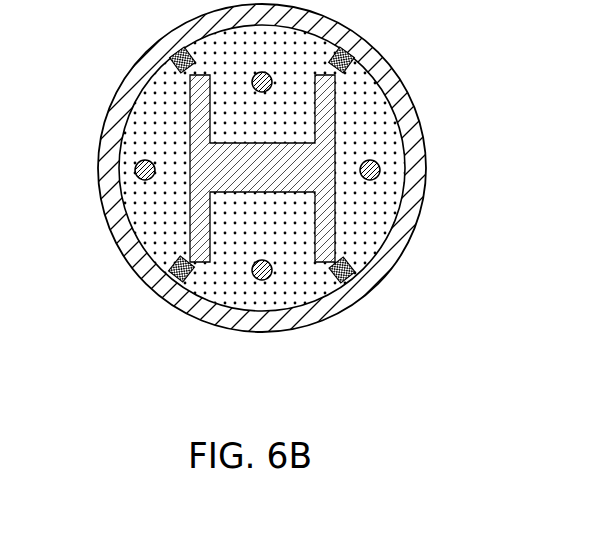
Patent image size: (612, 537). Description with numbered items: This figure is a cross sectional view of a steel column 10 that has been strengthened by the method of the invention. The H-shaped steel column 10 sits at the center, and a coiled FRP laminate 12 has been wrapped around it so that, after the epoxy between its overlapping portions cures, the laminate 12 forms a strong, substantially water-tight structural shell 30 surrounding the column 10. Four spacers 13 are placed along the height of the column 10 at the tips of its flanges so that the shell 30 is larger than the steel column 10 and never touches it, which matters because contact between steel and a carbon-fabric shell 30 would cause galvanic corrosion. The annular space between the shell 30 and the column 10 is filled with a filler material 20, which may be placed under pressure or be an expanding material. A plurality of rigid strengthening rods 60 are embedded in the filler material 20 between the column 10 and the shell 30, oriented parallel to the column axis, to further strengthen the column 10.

The steel column 10 is at (200, 213).
The FRP laminate 12 is at (112, 188).
The spacers 13 is at (170, 60).
The filler material 20 is at (367, 117).
The shell 30 is at (108, 113).
The rigid strengthening rods 60 is at (374, 173).